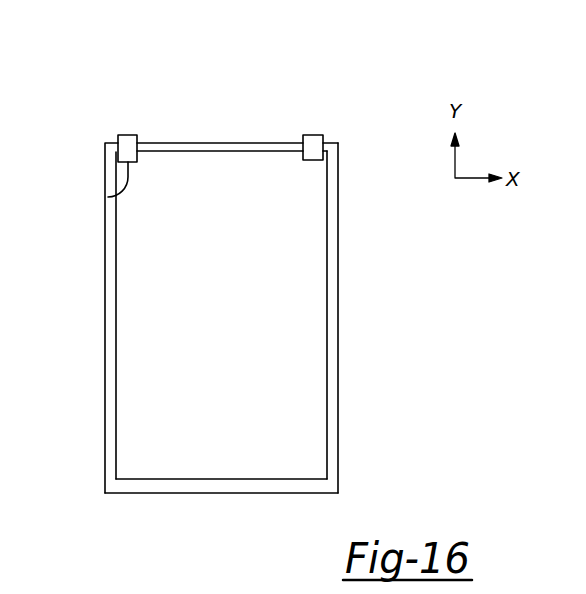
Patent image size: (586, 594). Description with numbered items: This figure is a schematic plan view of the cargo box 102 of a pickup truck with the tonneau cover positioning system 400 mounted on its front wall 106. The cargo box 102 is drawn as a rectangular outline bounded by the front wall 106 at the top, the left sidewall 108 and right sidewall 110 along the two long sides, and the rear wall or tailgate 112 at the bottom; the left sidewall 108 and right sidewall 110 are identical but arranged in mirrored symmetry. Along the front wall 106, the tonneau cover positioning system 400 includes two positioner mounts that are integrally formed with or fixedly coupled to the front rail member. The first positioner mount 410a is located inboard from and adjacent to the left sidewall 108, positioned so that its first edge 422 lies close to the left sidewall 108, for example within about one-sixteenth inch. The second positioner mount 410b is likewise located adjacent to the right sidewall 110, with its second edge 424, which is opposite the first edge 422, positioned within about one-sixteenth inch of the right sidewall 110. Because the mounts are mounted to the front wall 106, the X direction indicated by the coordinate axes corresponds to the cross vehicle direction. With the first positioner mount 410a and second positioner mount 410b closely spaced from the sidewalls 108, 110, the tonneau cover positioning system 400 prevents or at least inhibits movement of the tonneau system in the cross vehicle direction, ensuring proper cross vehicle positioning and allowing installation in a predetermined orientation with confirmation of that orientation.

The tonneau cover positioning system 400 is at (190, 95).
The cargo box 102 is at (214, 353).
The front wall 106 is at (206, 152).
The left sidewall 108 is at (105, 322).
The right sidewall 110 is at (338, 318).
The rear wall or tailgate 112 is at (220, 493).
The first positioner mount 410a is at (116, 196).
The second positioner mount 410b is at (313, 133).
The first edge 422 is at (118, 138).
The second edge 424 is at (338, 147).